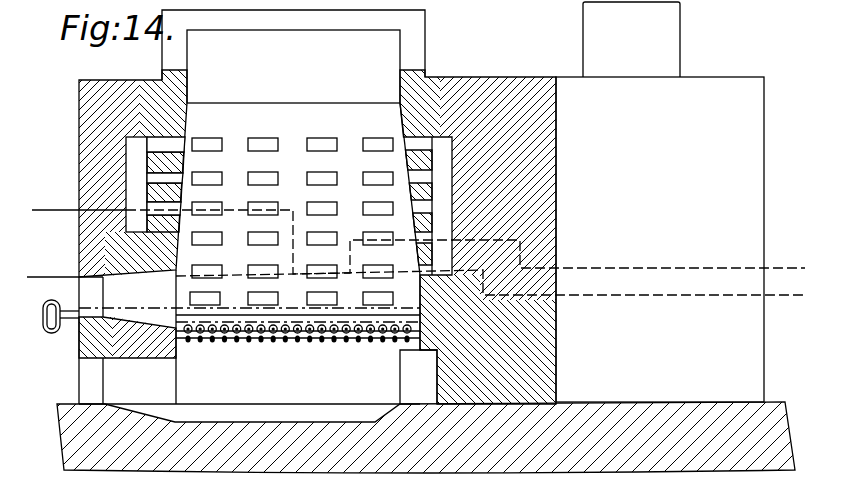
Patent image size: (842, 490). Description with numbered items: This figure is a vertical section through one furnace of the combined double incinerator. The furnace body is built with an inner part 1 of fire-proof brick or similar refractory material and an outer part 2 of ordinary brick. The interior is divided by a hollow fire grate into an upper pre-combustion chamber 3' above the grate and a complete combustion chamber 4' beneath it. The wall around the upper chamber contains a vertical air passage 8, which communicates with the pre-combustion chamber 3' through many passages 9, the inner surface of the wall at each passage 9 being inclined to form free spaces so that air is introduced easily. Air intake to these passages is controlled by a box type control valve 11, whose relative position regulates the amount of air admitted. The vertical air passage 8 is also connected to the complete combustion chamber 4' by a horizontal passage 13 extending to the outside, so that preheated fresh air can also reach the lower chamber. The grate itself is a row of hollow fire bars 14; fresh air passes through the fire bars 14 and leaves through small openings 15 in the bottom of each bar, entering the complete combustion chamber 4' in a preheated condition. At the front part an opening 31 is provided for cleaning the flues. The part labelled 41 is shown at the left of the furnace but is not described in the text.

The inner part 1 is at (416, 187).
The outer part 2 is at (478, 237).
The pre-combustion chamber 3' is at (293, 78).
The complete combustion chamber 4' is at (306, 337).
The vertical air passage 8 is at (155, 184).
The passage 9 is at (275, 221).
The box type control valve 11 is at (414, 264).
The horizontal passage 13 is at (412, 281).
The hollow fire bar 14 is at (234, 341).
The small opening 15 is at (253, 342).
The opening 31 is at (75, 370).
The valve 41 is at (56, 333).